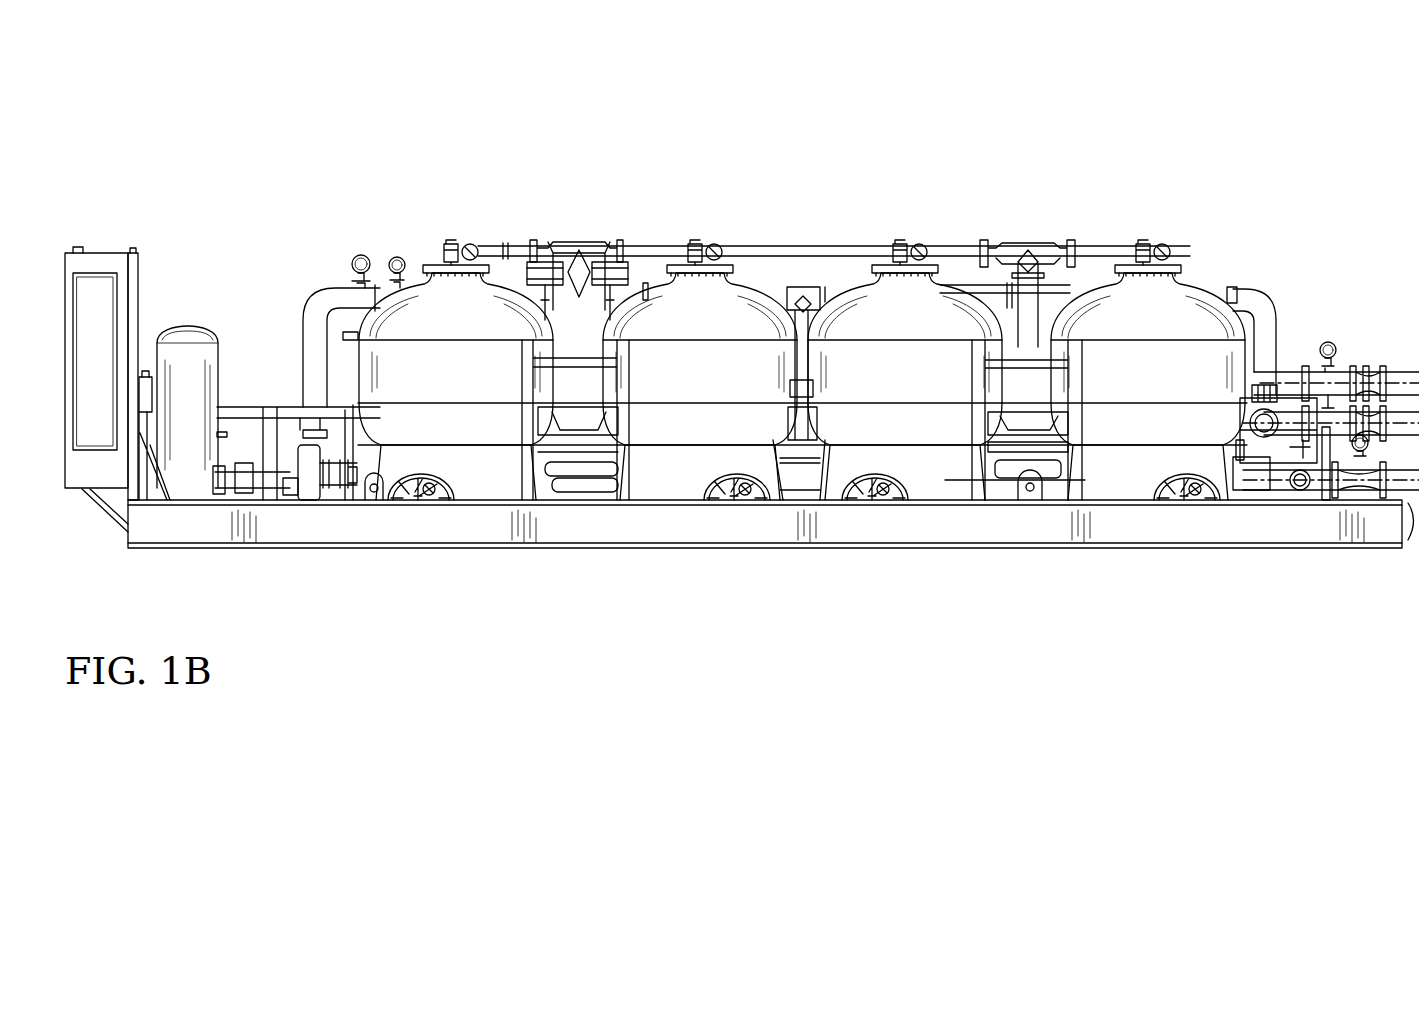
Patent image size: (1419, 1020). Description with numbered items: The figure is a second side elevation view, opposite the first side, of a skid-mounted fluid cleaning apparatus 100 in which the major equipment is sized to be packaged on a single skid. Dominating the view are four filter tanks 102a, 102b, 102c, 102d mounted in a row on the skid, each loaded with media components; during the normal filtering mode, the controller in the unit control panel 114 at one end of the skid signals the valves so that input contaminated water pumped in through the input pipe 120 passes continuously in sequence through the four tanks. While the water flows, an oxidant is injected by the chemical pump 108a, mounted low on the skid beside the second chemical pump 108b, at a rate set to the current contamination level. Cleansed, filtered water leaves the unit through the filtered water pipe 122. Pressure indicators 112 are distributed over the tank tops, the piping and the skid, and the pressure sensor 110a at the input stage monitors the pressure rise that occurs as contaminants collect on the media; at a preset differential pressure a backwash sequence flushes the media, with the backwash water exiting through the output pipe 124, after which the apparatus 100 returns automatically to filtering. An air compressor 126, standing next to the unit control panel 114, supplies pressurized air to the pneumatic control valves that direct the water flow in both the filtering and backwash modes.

The fluid cleaning apparatus 100 is at (307, 127).
The filter tank 102a is at (480, 310).
The filter tank 102b is at (730, 318).
The filter tank 102c is at (940, 303).
The filter tank 102d is at (1180, 310).
The chemical pump 108a is at (297, 480).
The chemical pump 108b is at (240, 478).
The pressure sensor 110a is at (352, 266).
The pressure indicator 112 is at (392, 258).
The unit control panel 114 is at (103, 257).
The input pipe 120 is at (1418, 575).
The filtered water pipe 122 is at (1418, 332).
The output pipe 124 is at (1405, 380).
The air compressor 126 is at (213, 380).